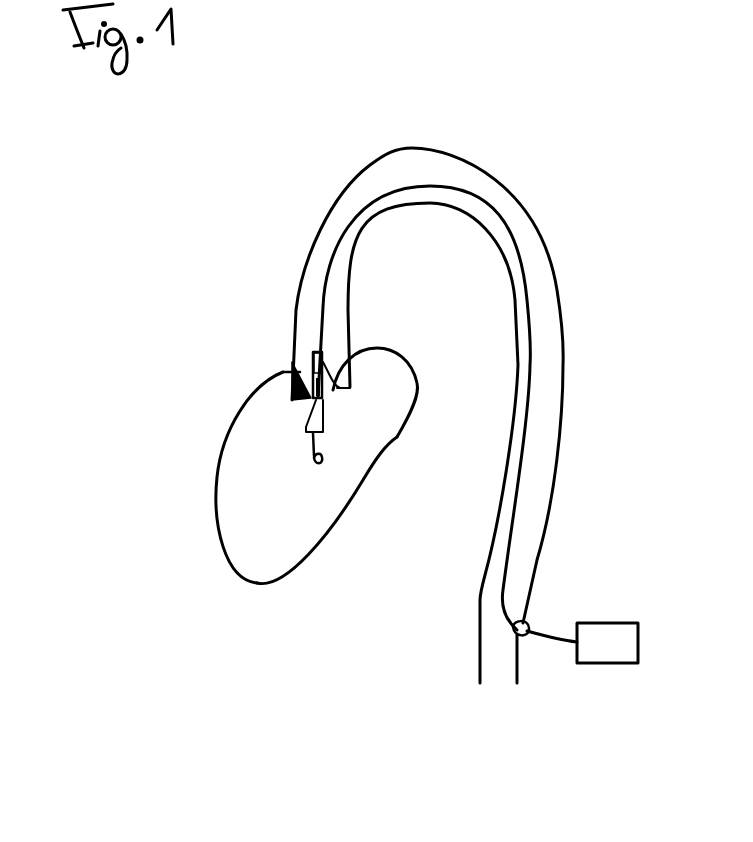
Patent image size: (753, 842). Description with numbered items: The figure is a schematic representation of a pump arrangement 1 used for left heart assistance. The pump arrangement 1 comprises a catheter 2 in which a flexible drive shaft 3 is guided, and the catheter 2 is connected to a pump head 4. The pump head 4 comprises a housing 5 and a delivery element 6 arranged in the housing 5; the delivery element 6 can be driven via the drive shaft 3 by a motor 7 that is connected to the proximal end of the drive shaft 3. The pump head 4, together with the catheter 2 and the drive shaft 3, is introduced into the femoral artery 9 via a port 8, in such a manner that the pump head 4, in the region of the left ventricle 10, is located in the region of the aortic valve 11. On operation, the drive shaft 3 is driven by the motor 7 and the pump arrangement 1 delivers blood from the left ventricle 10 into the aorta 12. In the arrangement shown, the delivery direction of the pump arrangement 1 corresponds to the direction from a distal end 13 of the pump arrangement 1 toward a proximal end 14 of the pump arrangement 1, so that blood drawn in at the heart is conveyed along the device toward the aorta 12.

The pump arrangement 1 is at (309, 122).
The catheter 2 is at (443, 190).
The flexible drive shaft 3 is at (307, 373).
The pump head 4 is at (250, 430).
The housing 5 is at (325, 432).
The delivery element 6 is at (325, 400).
The motor 7 is at (630, 623).
The port 8 is at (524, 626).
The femoral artery 9 is at (488, 618).
The left ventricle 10 is at (233, 488).
The aortic valve 11 is at (297, 372).
The aorta 12 is at (327, 227).
The distal end 13 is at (370, 533).
The proximal end 14 is at (611, 700).